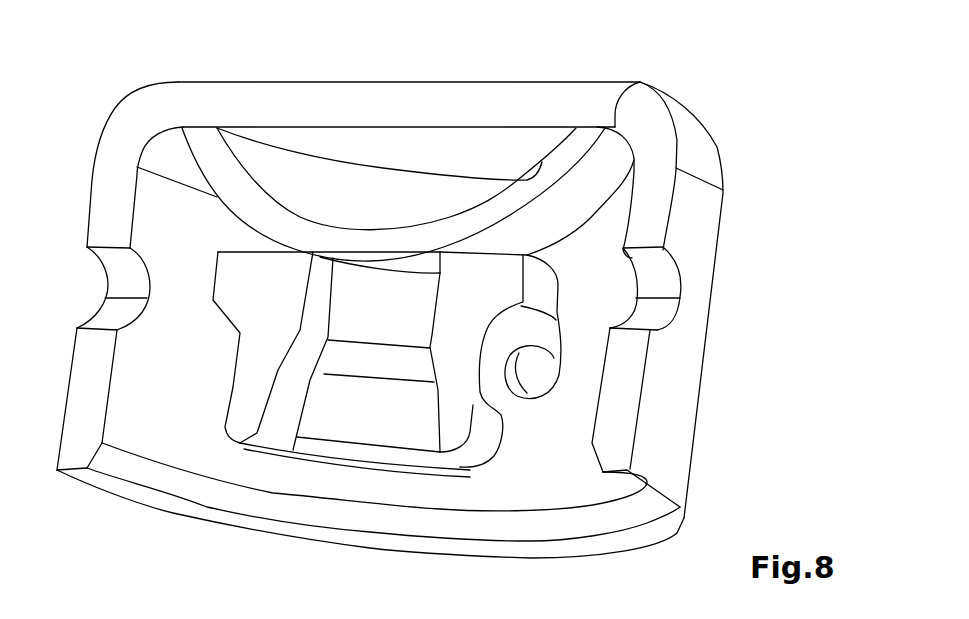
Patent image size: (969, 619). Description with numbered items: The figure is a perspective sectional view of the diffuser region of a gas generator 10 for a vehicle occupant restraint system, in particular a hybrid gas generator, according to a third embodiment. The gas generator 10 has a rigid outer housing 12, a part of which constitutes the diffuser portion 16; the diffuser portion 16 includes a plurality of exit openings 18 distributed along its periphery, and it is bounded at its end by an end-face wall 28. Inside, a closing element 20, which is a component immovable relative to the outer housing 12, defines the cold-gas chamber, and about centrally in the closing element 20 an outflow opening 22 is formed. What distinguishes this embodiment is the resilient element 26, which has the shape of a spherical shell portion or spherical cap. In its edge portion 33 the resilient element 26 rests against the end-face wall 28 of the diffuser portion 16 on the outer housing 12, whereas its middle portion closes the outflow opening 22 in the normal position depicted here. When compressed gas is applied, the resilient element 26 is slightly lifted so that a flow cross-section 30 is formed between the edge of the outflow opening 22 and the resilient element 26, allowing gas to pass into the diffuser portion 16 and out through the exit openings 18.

The gas generator 10 is at (790, 207).
The outer housing 12 is at (668, 403).
The diffuser portion 16 is at (699, 337).
The exit openings 18 is at (655, 274).
The closing element 20 is at (457, 408).
The outflow opening 22 is at (393, 419).
The resilient element 26 is at (542, 162).
The end-face wall 28 is at (407, 97).
The flow cross-section 30 is at (318, 268).
The edge portion 33 is at (640, 83).